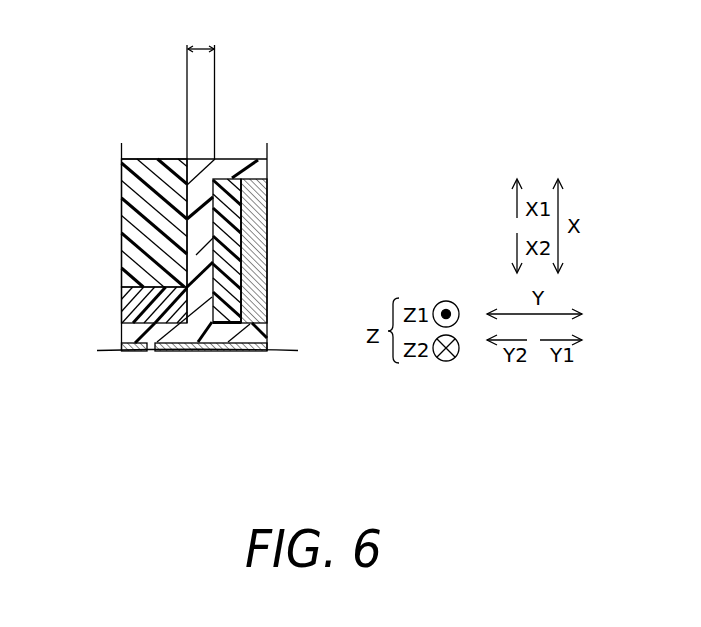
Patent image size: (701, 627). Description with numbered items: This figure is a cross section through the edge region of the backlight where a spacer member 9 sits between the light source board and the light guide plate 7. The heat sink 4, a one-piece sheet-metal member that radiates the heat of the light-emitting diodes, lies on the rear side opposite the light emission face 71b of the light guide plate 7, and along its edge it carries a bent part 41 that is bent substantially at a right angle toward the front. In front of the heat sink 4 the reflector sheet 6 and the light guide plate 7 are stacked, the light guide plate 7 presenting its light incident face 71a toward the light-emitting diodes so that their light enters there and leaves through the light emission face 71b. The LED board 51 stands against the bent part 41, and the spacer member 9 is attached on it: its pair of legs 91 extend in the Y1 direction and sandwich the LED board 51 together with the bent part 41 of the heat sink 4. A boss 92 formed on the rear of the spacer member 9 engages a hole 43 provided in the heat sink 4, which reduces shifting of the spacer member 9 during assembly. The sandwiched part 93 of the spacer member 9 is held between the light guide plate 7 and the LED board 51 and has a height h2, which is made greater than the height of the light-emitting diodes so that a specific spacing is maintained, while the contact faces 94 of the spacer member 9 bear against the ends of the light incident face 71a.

The heat sink 4 is at (212, 353).
The reflector sheet 6 is at (128, 303).
The light guide plate 7 is at (133, 222).
The spacer member 9 is at (222, 159).
The bent part 41 is at (255, 241).
The hole 43 is at (147, 353).
The LED board 51 is at (243, 210).
The light incident face 71a is at (196, 172).
The light emission face 71b is at (138, 159).
The leg 91 is at (230, 159).
The boss 92 is at (150, 353).
The sandwiched part 93 is at (250, 245).
The contact face 94 is at (172, 160).
The height of the spacer member h2 is at (202, 90).